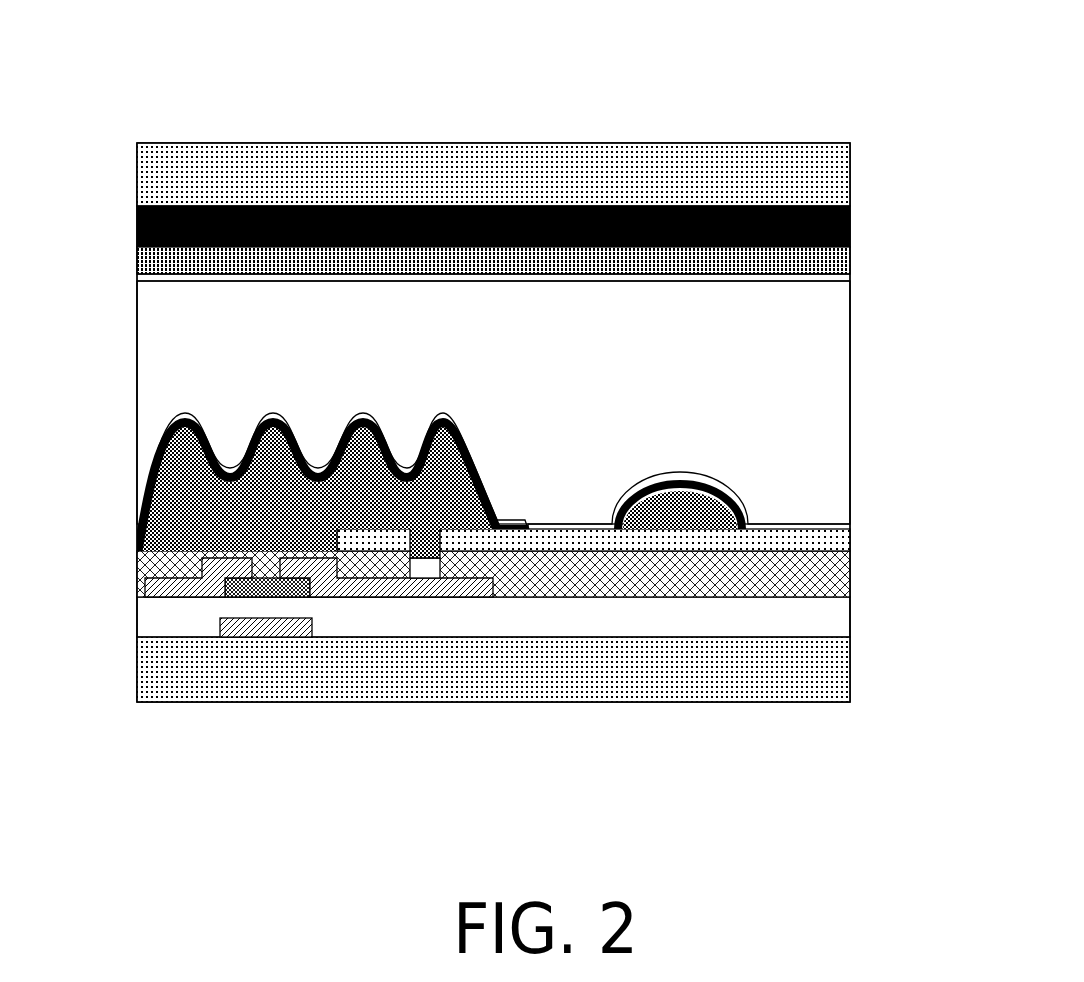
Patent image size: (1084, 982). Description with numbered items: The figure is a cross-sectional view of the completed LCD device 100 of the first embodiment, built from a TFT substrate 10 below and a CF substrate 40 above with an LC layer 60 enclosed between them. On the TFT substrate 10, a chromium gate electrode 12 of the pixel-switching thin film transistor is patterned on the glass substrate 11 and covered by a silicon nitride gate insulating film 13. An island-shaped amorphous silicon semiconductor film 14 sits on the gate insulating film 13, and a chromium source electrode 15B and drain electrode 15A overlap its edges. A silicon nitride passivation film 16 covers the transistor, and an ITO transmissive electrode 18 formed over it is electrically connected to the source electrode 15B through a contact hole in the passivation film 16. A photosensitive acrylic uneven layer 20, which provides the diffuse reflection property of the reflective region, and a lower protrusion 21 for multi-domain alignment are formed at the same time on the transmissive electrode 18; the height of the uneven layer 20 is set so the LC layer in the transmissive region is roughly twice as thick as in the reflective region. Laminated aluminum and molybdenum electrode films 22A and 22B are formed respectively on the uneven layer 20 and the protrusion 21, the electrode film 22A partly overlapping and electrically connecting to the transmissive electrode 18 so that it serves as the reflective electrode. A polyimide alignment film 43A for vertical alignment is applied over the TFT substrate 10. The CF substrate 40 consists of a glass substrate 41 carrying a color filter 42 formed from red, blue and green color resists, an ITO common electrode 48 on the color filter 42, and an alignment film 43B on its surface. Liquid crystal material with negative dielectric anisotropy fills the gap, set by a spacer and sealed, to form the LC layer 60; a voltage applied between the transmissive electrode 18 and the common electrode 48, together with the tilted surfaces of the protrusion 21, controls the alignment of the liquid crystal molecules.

The LCD device 100 is at (525, 106).
The CF substrate 40 is at (491, 214).
The glass substrate 41 is at (830, 178).
The color filter 42 is at (830, 223).
The common electrode 48 is at (830, 263).
The alignment film 43A is at (445, 416).
The alignment film 43B is at (622, 283).
The LC layer 60 is at (835, 372).
The TFT substrate 10 is at (498, 614).
The glass substrate 11 is at (835, 684).
The gate electrode 12 is at (248, 637).
The gate insulating film 13 is at (832, 625).
The semiconductor film 14 is at (285, 597).
The drain electrode 15A is at (162, 597).
The source electrode 15B is at (438, 597).
The passivation film 16 is at (835, 578).
The transmissive electrode 18 is at (832, 545).
The uneven layer 20 is at (458, 505).
The protrusion 21 is at (716, 510).
The electrode film 22A is at (296, 428).
The electrode film 22B is at (684, 477).